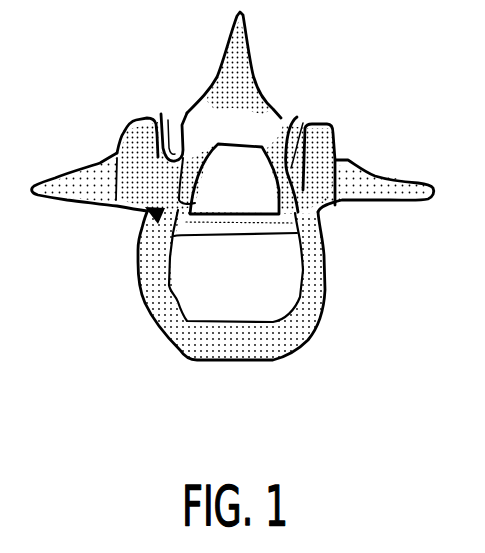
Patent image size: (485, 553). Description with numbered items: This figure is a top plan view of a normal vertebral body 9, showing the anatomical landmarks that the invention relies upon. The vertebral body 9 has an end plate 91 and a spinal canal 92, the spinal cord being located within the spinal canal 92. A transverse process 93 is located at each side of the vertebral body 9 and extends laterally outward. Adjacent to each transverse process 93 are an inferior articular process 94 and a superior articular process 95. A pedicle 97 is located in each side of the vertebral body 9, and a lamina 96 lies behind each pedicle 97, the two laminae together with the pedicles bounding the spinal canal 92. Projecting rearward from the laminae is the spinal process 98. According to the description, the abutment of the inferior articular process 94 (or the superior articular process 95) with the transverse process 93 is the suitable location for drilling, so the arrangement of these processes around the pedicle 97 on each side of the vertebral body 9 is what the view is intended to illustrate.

The vertebral body 9 is at (186, 357).
The end plate 91 is at (305, 317).
The spinal canal 92 is at (153, 211).
The transverse process 93 is at (415, 193).
The inferior articular process 94 is at (327, 123).
The superior articular process 95 is at (126, 128).
The lamina 96 is at (179, 126).
The pedicle 97 is at (287, 132).
The spinal process 98 is at (241, 13).